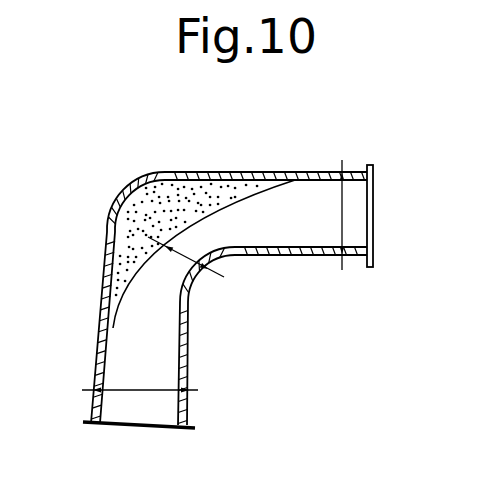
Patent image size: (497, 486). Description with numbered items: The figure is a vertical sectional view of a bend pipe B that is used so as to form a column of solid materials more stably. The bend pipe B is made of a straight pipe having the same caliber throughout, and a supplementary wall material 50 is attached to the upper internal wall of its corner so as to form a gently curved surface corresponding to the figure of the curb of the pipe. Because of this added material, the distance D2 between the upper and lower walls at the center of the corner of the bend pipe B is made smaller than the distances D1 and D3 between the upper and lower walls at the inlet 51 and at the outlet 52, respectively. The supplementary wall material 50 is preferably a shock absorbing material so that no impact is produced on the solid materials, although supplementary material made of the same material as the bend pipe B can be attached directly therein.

The supplementary wall material 50 is at (142, 228).
The inlet 51 is at (145, 428).
The outlet 52 is at (373, 200).
The bend pipe B is at (225, 161).
The distance between upper and lower walls at the inlet D1 is at (140, 376).
The distance between upper and lower walls at the corner center D2 is at (206, 265).
The distance between upper and lower walls at the outlet D3 is at (323, 215).